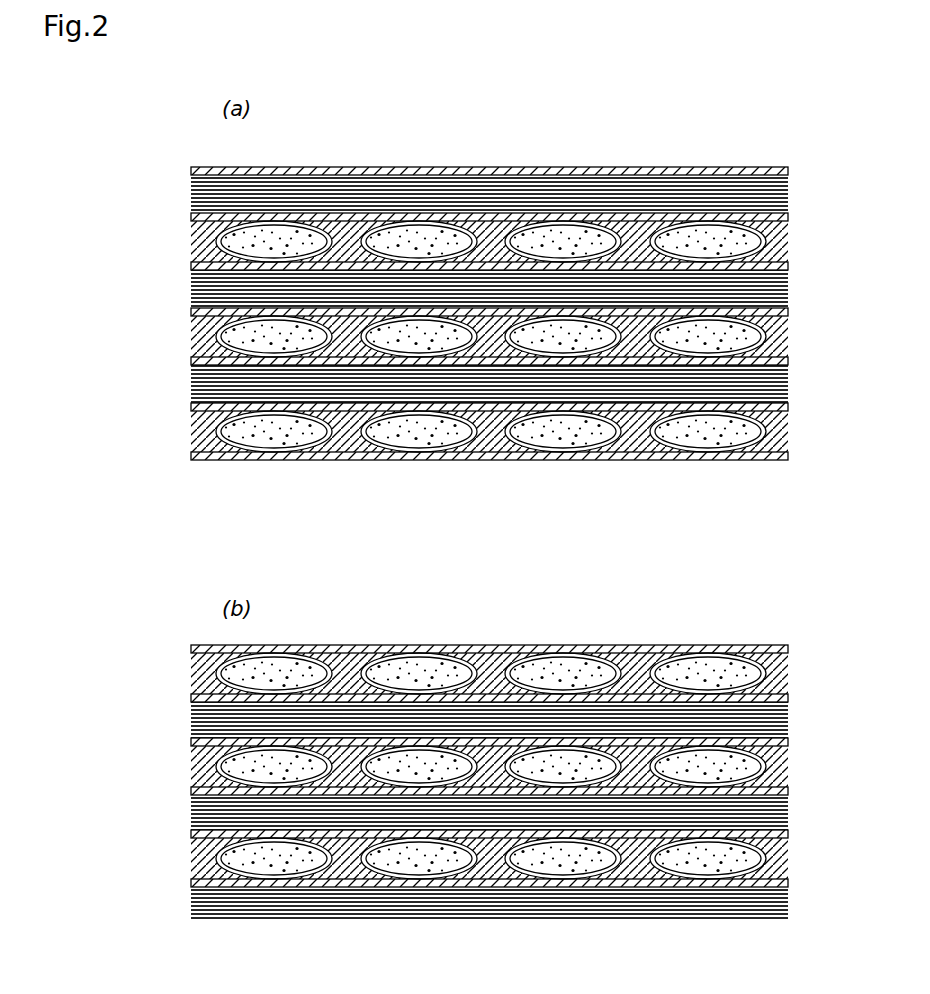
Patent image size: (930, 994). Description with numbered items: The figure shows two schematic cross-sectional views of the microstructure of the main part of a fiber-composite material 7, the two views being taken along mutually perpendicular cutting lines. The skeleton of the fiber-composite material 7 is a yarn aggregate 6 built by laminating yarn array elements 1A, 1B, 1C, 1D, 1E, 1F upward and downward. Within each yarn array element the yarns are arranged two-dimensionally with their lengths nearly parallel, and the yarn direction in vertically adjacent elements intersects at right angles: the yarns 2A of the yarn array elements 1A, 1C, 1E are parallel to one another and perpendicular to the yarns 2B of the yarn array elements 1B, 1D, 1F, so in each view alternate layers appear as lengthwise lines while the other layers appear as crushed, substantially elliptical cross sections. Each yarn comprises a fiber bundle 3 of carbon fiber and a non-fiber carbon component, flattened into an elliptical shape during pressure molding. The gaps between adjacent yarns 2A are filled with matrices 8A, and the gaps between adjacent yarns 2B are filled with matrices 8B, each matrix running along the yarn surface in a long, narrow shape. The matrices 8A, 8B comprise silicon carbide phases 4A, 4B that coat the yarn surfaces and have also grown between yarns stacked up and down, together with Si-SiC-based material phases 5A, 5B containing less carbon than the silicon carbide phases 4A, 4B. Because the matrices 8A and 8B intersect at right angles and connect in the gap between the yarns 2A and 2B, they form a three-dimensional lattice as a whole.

The yarn array element 1A is at (824, 434).
The yarn array element 1B is at (824, 481).
The yarn array element 1C is at (824, 527).
The yarn array element 1D is at (825, 573).
The yarn array element 1E is at (823, 620).
The yarn array element 1F is at (822, 667).
The yarn 2A is at (257, 185).
The yarn 2B is at (233, 235).
The fiber bundle 3 is at (416, 183).
The silicon carbide phase 4A is at (193, 158).
The silicon carbide phase 4B is at (210, 333).
The Si-SiC-based material phase 5A is at (346, 648).
The Si-SiC-based material phase 5B is at (343, 223).
The yarn aggregate 6 is at (783, 165).
The fiber-composite material 7 is at (775, 144).
The matrix 8A is at (491, 638).
The matrix 8B is at (499, 196).